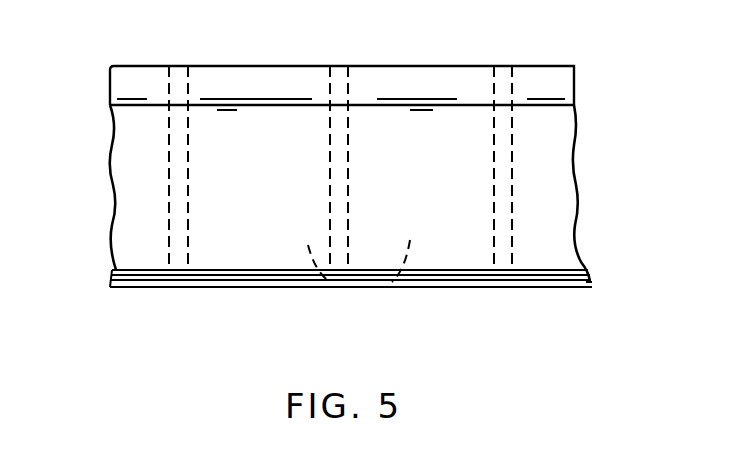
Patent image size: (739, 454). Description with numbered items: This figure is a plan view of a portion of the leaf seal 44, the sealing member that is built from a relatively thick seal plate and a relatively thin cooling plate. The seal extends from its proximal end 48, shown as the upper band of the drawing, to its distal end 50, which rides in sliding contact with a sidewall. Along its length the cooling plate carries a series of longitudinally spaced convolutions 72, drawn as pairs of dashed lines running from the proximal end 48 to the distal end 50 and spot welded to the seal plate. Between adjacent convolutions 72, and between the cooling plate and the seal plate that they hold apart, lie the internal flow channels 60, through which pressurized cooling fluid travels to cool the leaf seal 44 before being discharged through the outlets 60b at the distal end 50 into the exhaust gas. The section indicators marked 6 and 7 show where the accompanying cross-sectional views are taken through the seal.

The leaf seal 44 is at (474, 296).
The proximal end 48 is at (452, 80).
The distal end 50 is at (128, 262).
The internal flow channels 60 is at (395, 287).
The outlet 60b is at (572, 285).
The convolutions 72 is at (508, 188).
The section line 6- 6 is at (286, 9).
The section line 7- 7 is at (378, 153).